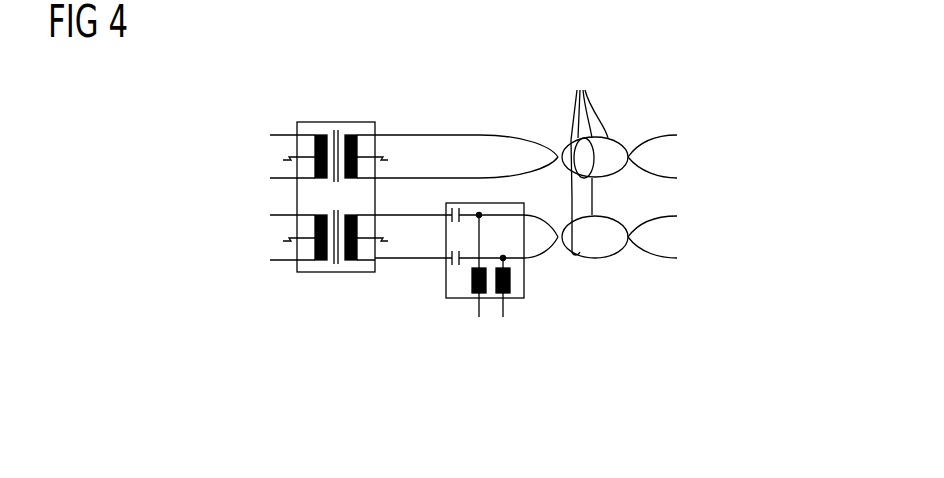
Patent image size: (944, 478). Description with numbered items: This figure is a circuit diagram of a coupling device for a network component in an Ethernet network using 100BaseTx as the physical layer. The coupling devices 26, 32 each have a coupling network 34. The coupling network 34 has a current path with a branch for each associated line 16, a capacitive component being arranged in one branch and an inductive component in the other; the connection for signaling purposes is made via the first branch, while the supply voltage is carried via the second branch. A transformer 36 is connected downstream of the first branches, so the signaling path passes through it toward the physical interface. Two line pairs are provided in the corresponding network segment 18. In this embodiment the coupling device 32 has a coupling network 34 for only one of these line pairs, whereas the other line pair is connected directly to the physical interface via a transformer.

The line 16 is at (595, 158).
The network segment 18 is at (710, 73).
The coupling device 26 is at (226, 239).
The coupling device 32 is at (266, 294).
The coupling network 34 is at (524, 286).
The transformer 36 is at (335, 122).